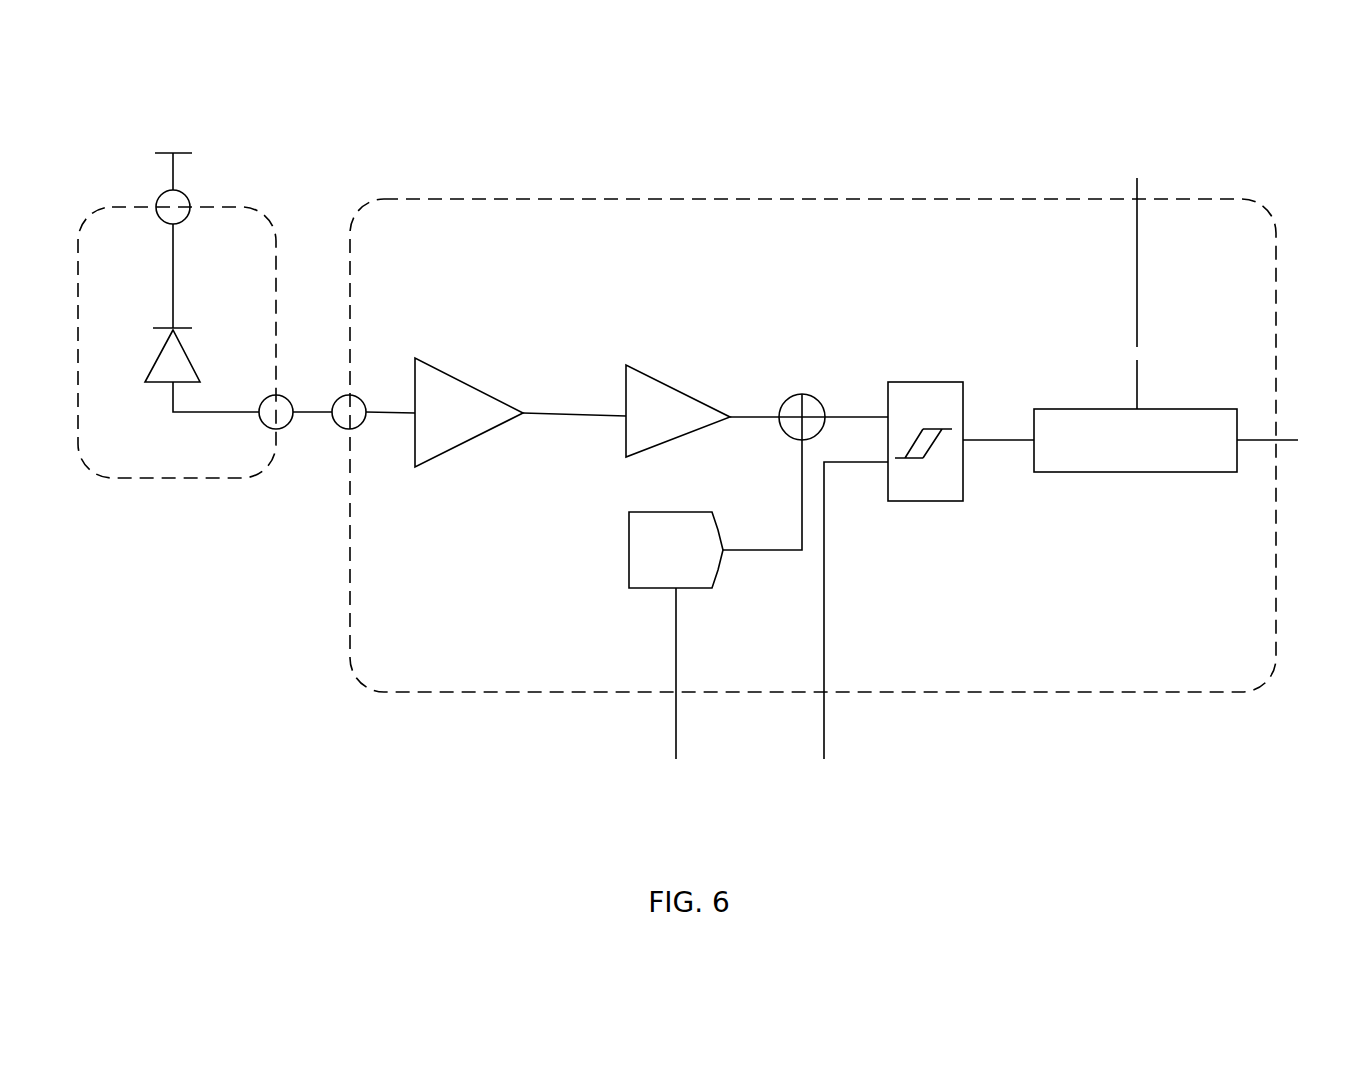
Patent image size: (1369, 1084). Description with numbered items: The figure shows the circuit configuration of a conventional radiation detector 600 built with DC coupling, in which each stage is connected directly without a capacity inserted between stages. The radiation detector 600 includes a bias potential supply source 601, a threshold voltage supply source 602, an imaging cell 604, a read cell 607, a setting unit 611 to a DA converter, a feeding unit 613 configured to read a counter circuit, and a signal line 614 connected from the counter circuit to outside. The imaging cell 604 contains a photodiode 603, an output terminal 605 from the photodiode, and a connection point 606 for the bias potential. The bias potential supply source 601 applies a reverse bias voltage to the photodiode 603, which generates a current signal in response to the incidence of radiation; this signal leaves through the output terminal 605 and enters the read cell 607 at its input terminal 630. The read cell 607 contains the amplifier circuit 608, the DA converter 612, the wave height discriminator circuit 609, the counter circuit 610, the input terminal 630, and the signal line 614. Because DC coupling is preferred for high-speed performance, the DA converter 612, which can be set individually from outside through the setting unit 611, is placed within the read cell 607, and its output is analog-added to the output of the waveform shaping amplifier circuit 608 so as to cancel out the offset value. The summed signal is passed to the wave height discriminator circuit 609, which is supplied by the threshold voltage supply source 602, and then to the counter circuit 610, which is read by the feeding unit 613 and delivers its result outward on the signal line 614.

The radiation detector 600 is at (699, 137).
The bias potential supply source 601 is at (168, 152).
The threshold voltage supply source 602 is at (824, 777).
The photodiode 603 is at (187, 353).
The imaging cell 604 is at (127, 478).
The output terminal 605 is at (282, 429).
The connection point 606 is at (187, 192).
The read cell 607 is at (792, 197).
The amplifier circuit 608 is at (467, 383).
The wave height discriminator circuit 609 is at (935, 382).
The counter circuit 610 is at (1152, 408).
The setting unit 611 is at (676, 777).
The DA converter 612 is at (675, 512).
The feeding unit 613 is at (1137, 120).
The signal line 614 is at (1350, 440).
The input terminal 630 is at (337, 398).